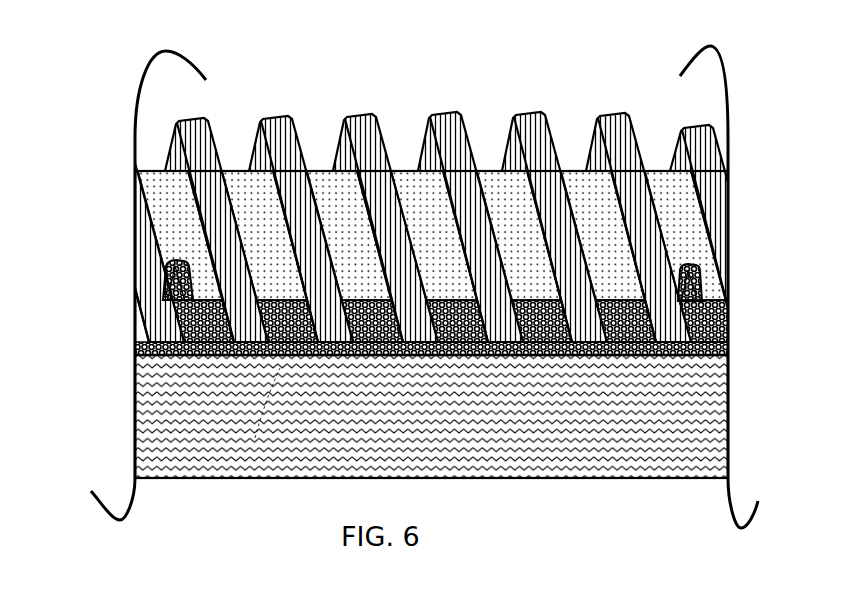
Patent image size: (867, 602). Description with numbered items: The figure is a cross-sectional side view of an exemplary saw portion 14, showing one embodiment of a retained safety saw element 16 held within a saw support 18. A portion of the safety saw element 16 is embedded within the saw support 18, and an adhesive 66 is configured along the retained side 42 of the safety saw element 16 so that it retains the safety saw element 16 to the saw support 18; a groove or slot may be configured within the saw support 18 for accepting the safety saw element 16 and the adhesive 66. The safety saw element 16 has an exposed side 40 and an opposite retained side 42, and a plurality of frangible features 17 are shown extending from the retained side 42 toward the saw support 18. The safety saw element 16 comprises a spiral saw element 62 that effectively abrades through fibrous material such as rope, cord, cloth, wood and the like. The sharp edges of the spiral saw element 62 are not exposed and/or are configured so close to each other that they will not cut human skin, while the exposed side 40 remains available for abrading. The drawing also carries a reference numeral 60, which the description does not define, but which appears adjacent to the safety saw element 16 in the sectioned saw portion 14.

The saw portion 14 is at (723, 398).
The safety saw element 16 is at (272, 100).
The frangible features 17 is at (163, 264).
The saw support 18 is at (127, 370).
The exposed side 40 is at (537, 103).
The retained side 42 is at (688, 266).
The dielectric layer 60 is at (503, 112).
The spiral saw element 62 is at (350, 108).
The adhesive 66 is at (247, 430).